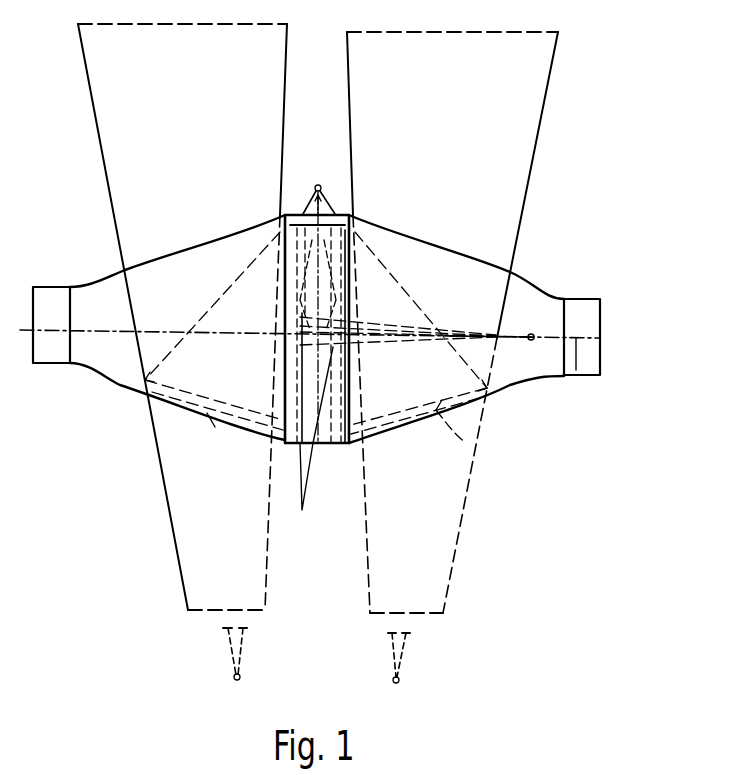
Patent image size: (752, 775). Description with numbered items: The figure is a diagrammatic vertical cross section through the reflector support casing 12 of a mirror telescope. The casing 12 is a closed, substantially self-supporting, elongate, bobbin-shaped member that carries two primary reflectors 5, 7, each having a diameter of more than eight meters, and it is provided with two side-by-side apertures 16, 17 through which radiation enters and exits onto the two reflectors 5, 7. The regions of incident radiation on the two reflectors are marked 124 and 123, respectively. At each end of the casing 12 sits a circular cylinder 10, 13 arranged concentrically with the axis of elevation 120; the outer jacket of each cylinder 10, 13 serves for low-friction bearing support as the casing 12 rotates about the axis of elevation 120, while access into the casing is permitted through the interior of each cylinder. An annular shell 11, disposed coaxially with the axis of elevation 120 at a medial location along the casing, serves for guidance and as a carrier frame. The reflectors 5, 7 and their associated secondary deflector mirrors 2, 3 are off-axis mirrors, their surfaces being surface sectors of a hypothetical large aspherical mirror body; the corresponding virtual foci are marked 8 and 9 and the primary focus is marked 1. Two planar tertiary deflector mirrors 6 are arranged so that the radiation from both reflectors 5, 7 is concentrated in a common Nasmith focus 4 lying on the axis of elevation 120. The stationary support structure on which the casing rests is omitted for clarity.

The primary focus 1 is at (318, 185).
The secondary deflector mirror 2 is at (299, 213).
The secondary deflector mirror 3 is at (328, 213).
The Nasmith focus 4 is at (531, 334).
The primary reflector 5 is at (210, 413).
The tertiary deflector mirror 6 is at (302, 499).
The primary reflector 7 is at (481, 443).
The virtual focus 8 is at (234, 678).
The virtual focus 9 is at (399, 680).
The circular cylinder 10 is at (50, 287).
The annular shell 11 is at (333, 443).
The reflector support casing 12 is at (516, 395).
The circular cylinder 13 is at (584, 299).
The aperture 16 is at (187, 252).
The aperture 17 is at (431, 257).
The axis of elevation 120 is at (576, 340).
The region of incident radiation 123 is at (549, 73).
The region of incident radiation 124 is at (92, 108).